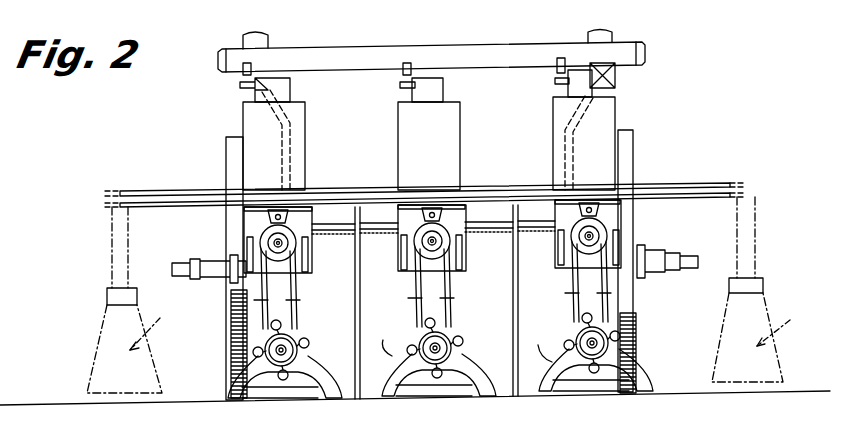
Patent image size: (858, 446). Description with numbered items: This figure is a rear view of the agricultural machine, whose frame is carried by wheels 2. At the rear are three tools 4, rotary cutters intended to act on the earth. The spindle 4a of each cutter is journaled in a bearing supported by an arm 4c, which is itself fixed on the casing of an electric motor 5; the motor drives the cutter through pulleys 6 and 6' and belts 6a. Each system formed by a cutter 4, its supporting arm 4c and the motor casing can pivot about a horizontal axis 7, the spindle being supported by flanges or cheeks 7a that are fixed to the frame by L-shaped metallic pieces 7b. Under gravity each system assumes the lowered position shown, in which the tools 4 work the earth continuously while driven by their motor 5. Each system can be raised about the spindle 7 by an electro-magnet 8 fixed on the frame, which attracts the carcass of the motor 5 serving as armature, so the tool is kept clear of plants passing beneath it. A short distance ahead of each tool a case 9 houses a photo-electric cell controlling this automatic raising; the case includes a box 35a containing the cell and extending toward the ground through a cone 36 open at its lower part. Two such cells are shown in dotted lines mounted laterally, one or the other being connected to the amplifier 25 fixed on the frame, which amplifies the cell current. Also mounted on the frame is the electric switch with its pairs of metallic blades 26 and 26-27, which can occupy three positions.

The wheels 2 is at (228, 148).
The tools 4 is at (320, 340).
The spindle 4a is at (278, 349).
The supporting arm 4c is at (282, 272).
The electric motor 5 is at (266, 234).
The pulley 6 is at (432, 225).
The pulley 6' is at (436, 370).
The belts 6a is at (293, 297).
The horizontal axis 7 is at (312, 240).
The flanges or cheeks 7a is at (247, 245).
The L-shaped metallic pieces 7b is at (260, 207).
The electro-magnet 8 is at (280, 210).
The case 9 is at (617, 307).
The amplifier 25 is at (300, 116).
The metallic blades 26 is at (290, 90).
The two pairs of metallic blades 26-27 is at (615, 77).
The box 35a is at (107, 298).
The cone 36 is at (108, 364).